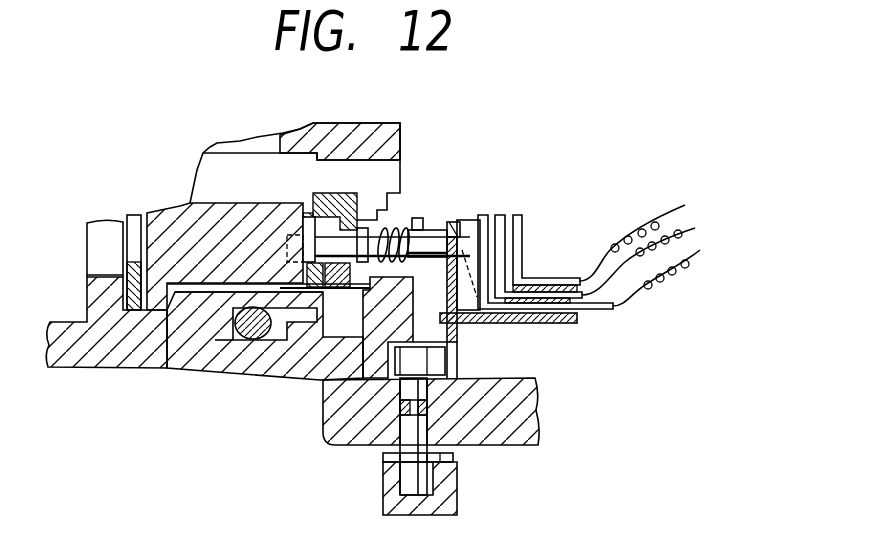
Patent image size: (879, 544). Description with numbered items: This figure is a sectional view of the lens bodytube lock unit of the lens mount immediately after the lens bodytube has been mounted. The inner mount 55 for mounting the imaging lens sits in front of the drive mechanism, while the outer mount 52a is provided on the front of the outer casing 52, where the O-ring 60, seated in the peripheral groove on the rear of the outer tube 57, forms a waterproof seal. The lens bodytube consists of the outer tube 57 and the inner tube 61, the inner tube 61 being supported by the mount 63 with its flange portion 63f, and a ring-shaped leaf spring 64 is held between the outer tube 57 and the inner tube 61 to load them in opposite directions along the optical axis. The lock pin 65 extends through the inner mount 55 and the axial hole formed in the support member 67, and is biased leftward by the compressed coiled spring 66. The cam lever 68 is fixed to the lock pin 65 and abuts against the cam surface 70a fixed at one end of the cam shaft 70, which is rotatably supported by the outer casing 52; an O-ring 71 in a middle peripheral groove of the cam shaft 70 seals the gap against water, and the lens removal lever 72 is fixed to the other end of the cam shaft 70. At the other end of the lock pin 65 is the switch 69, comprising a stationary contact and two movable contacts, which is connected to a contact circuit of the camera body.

The outer casing 52 is at (514, 403).
The outer mount 52a is at (271, 362).
The inner mount 55 is at (343, 203).
The outer tube 57 is at (80, 340).
The O-ring 60 is at (255, 340).
The inner tube 61 is at (173, 226).
The mount 63 is at (328, 192).
The flange of rotary member 63f is at (302, 225).
The ring-shaped leaf spring 64 is at (138, 313).
The lock pin 65 is at (430, 243).
The compressed coiled spring 66 is at (387, 240).
The support member 67 is at (420, 218).
The cam lever 68 is at (459, 233).
The switch 69 is at (532, 242).
The cam shaft 70 is at (417, 430).
The cam surface 70a is at (435, 361).
The O-ring 71 is at (400, 407).
The lens removal lever 72 is at (386, 505).